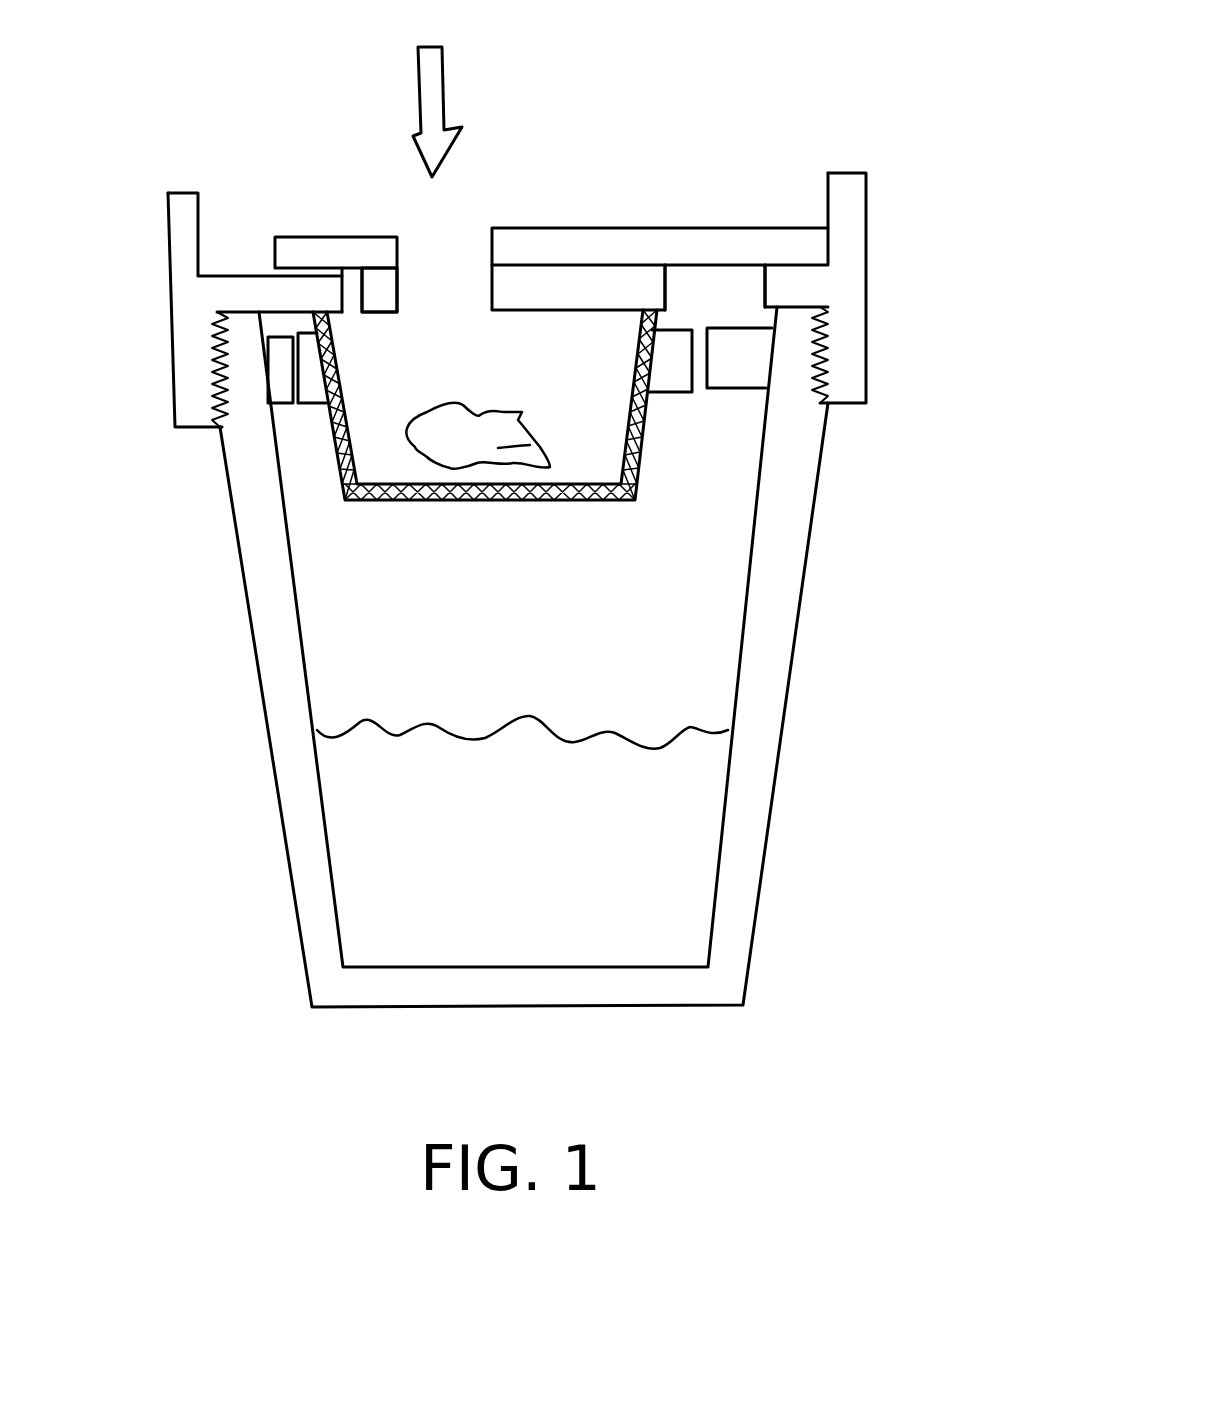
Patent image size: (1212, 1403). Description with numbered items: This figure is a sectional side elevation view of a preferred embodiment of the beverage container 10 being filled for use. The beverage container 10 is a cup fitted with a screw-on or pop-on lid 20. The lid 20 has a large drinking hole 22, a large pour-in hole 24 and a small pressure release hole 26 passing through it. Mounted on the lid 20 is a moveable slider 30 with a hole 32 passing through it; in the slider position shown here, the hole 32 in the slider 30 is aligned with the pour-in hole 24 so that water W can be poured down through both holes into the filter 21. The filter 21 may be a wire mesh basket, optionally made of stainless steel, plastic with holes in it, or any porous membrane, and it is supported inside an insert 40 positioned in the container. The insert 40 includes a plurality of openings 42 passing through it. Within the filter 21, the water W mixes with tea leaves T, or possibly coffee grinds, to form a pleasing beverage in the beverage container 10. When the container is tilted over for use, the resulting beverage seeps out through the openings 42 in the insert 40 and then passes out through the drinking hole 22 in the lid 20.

The beverage container 10 is at (912, 526).
The tea leaves T is at (530, 467).
The lid 20 is at (868, 270).
The filter 21 is at (368, 502).
The drinking hole 22 is at (708, 282).
The pour-in hole 24 is at (451, 301).
The pressure release hole 26 is at (352, 306).
The slider 30 is at (357, 237).
The hole 32 is at (438, 236).
The insert 40 is at (278, 380).
The openings 42 is at (304, 416).
The water W is at (443, 85).